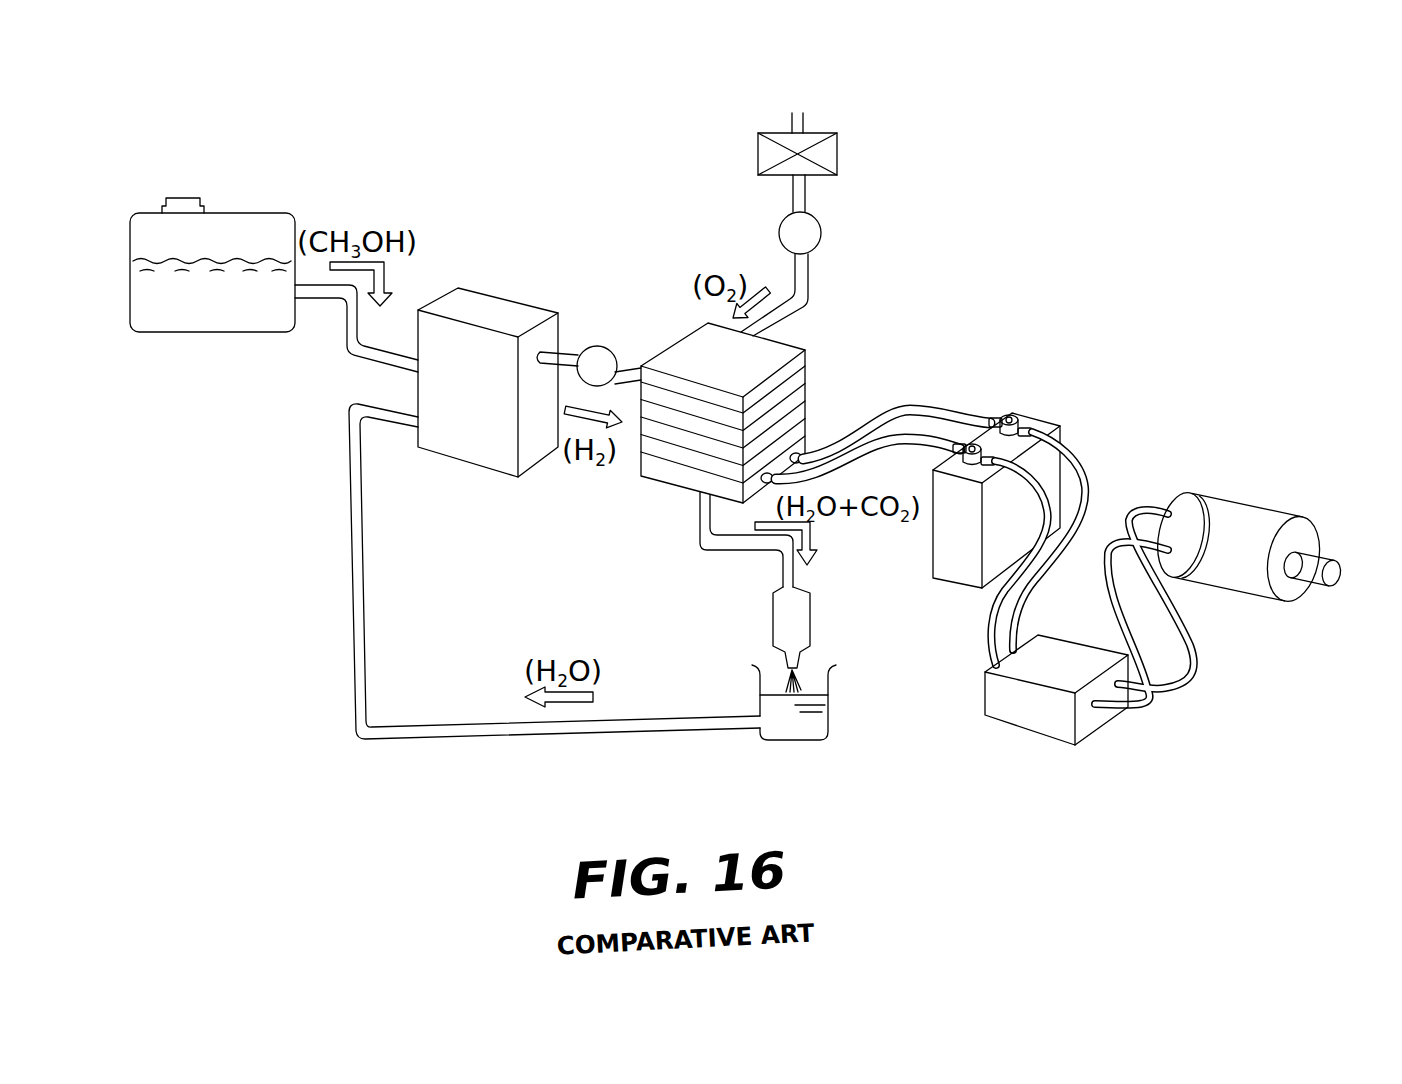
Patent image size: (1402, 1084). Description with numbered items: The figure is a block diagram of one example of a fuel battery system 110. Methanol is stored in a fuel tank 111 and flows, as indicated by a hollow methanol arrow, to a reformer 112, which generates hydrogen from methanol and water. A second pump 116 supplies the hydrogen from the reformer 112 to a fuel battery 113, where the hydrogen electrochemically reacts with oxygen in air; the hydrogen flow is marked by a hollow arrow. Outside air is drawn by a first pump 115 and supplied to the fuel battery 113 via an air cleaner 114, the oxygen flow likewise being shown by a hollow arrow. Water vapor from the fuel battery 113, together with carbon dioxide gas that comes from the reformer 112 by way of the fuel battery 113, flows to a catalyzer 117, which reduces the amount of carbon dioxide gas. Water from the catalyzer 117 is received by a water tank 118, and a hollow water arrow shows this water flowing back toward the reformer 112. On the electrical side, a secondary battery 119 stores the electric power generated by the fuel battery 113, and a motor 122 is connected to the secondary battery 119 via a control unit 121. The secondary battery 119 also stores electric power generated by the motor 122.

The fuel battery system 110 is at (1106, 142).
The fuel tank 111 is at (245, 213).
The reformer 112 is at (498, 290).
The fuel battery 113 is at (790, 347).
The air cleaner 114 is at (837, 147).
The first pump 115 is at (822, 233).
The second pump 116 is at (598, 347).
The catalyzer 117 is at (810, 608).
The water tank 118 is at (828, 680).
The secondary battery 119 is at (1040, 420).
The control unit 121 is at (1010, 722).
The motor 122 is at (1247, 502).